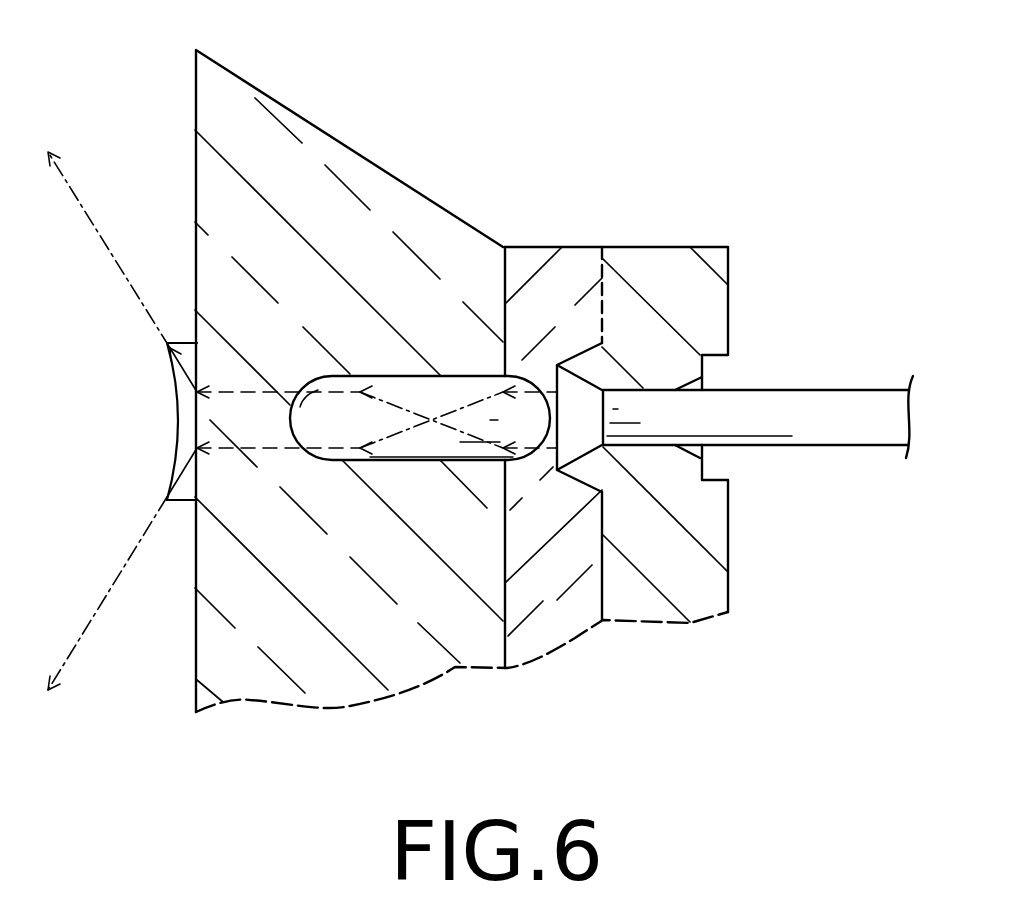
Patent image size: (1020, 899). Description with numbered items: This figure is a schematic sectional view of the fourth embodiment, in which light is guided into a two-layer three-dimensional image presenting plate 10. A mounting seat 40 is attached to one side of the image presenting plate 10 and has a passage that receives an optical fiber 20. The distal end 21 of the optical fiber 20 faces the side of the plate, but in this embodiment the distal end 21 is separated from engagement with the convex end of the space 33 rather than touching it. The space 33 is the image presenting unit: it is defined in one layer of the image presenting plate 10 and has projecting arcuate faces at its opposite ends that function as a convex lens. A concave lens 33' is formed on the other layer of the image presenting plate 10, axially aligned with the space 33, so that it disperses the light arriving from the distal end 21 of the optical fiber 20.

The 3D image presenting plate 10 is at (475, 368).
The optical fiber 20 is at (797, 435).
The distal end 21 is at (590, 452).
The space 33 is at (394, 242).
The concave lens 33' is at (117, 376).
The mounting seat 40 is at (720, 305).